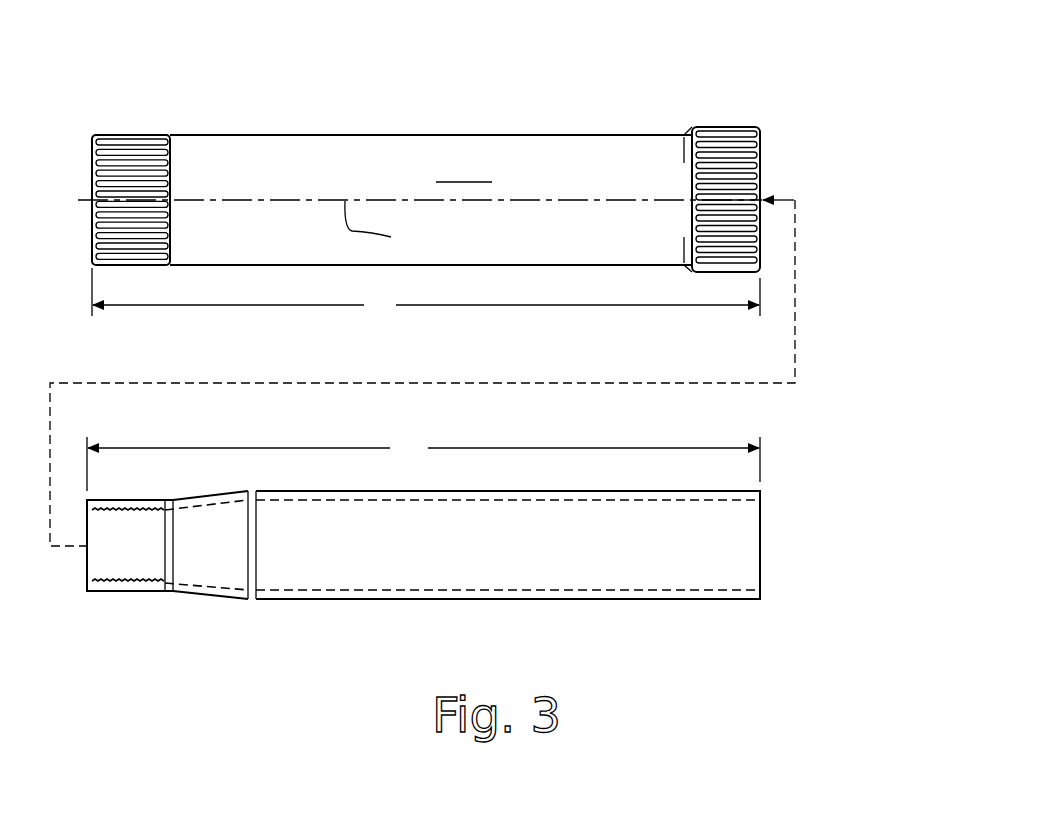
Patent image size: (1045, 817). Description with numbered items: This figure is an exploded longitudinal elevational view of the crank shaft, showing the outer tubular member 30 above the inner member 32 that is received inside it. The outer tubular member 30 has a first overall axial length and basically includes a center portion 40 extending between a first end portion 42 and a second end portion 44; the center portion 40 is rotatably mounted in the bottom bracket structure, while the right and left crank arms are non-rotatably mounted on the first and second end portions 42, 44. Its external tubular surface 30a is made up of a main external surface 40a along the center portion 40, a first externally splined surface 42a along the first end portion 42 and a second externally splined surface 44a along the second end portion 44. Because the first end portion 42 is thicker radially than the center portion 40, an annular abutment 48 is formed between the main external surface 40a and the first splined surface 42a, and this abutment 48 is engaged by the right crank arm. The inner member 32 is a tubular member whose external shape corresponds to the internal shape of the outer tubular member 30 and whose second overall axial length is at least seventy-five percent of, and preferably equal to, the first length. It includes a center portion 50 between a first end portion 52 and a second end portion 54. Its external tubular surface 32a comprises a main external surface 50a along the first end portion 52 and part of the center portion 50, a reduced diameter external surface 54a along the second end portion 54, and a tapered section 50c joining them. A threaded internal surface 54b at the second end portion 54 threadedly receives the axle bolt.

The outer tubular member 30 is at (452, 161).
The external tubular surface 30a is at (464, 168).
The inner member 32 is at (431, 572).
The external tubular surface 32a is at (160, 623).
The center portion 40 is at (431, 151).
The main external surface 40a is at (300, 135).
The first end portion 42 is at (771, 152).
The first externally splined surface 42a is at (737, 163).
The second end portion 44 is at (115, 157).
The second externally splined surface 44a is at (97, 135).
The annular abutment 48 is at (684, 133).
The center portion 50 is at (420, 600).
The main external surface 50a is at (282, 600).
The tapered section 50c is at (193, 596).
The first end portion 52 is at (731, 600).
The second end portion 54 is at (90, 603).
The reduced diameter external surface 54a is at (125, 594).
The threaded internal surface 54b is at (134, 576).